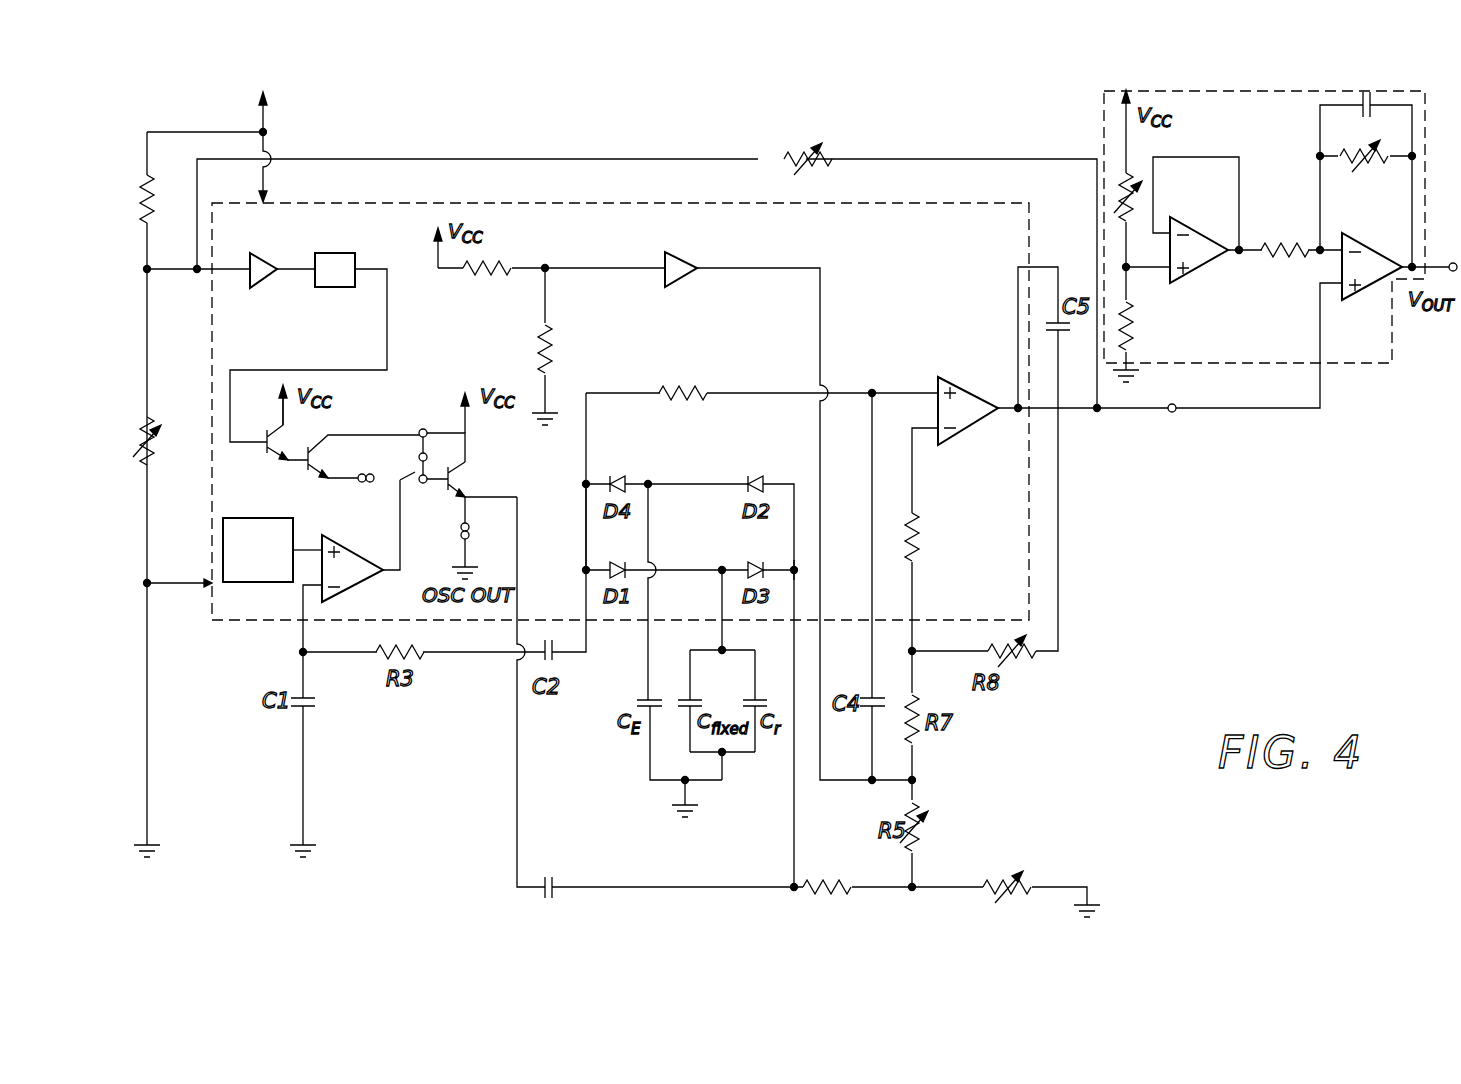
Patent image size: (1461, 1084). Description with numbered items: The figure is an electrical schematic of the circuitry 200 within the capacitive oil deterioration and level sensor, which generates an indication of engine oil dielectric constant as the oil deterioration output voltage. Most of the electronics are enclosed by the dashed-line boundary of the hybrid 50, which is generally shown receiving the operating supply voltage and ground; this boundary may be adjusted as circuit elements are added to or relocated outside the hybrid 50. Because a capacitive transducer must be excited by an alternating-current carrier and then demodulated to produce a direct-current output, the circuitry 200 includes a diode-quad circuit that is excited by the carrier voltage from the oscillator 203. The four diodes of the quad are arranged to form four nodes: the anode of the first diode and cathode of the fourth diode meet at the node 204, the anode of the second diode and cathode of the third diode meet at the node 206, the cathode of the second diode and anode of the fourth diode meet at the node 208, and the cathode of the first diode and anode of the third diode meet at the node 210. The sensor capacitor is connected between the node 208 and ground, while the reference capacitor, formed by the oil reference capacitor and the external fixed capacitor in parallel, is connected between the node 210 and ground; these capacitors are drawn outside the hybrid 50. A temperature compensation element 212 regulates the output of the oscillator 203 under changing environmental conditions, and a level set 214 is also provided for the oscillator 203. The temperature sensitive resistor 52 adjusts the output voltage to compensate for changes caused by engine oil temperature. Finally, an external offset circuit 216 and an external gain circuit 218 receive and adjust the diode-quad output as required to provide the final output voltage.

The hybrid 50 is at (928, 203).
The temperature sensitive resistor 52 is at (1003, 884).
The circuitry 200 is at (1223, 537).
The oscillator 203 is at (345, 545).
The node 204 is at (584, 482).
The node 206 is at (793, 566).
The node 208 is at (651, 482).
The node 210 is at (698, 568).
The temperature compensation element 212 is at (337, 253).
The level set 214 is at (238, 518).
The external offset circuit 216 is at (1200, 272).
The external gain circuit 218 is at (1360, 237).